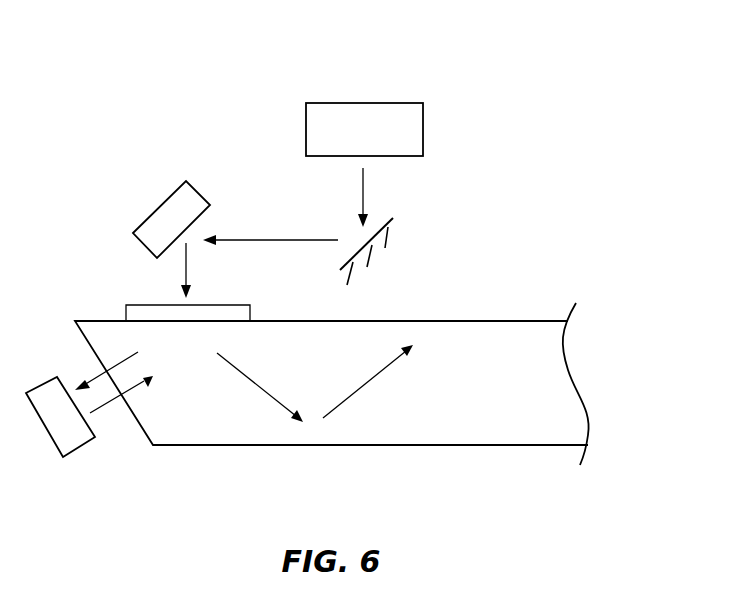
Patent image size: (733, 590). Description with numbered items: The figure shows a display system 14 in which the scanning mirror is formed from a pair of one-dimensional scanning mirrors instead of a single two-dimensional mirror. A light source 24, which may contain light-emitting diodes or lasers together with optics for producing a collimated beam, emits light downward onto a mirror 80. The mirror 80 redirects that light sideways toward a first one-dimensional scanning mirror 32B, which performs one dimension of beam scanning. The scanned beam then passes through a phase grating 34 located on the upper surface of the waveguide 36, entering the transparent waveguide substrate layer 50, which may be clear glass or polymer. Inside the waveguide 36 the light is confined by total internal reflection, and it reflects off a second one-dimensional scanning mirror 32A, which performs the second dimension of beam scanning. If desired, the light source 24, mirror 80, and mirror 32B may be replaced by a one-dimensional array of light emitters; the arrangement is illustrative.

The display system 14 is at (562, 82).
The light source 24 is at (423, 126).
The second one-dimensional scanning mirror 32A is at (80, 448).
The first one-dimensional scanning mirror 32B is at (150, 206).
The phase grating 34 is at (250, 313).
The waveguide 36 is at (634, 324).
The transparent waveguide substrate layer 50 is at (507, 427).
The mirror 80 is at (380, 238).